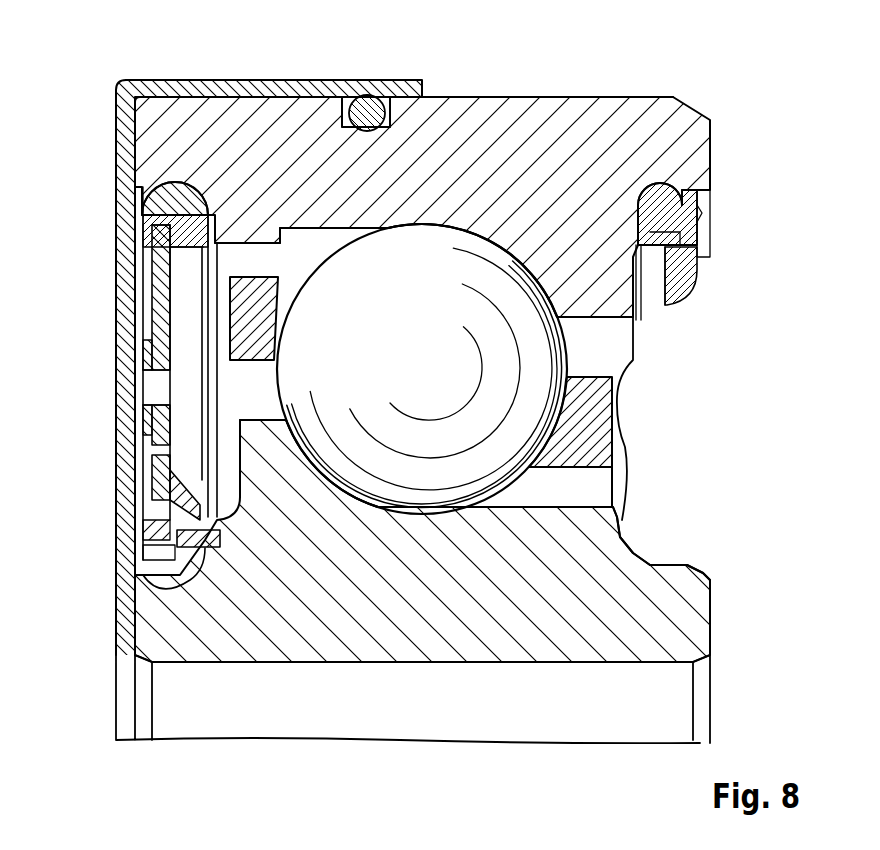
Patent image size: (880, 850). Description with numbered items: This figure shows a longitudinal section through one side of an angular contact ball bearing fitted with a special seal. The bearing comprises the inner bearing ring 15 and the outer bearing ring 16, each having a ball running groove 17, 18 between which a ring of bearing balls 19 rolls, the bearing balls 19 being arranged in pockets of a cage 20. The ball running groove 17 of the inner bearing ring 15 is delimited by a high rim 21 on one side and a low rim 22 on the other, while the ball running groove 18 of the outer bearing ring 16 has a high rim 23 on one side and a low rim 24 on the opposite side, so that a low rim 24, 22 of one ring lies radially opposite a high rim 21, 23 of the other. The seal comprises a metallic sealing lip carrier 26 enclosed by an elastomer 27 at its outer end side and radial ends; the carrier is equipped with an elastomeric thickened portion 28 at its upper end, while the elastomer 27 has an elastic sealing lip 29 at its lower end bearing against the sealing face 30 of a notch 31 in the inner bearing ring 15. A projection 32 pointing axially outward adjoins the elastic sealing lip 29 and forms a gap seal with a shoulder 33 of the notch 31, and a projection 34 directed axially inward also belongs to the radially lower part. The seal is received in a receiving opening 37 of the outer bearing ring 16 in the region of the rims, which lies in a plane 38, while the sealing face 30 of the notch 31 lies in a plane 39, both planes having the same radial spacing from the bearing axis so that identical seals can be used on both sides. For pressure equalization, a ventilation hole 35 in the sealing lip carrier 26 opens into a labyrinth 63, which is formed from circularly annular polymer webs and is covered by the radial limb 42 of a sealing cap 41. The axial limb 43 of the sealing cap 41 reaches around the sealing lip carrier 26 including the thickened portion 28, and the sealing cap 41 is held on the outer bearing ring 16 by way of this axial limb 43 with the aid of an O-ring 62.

The inner bearing ring 15 is at (435, 650).
The outer bearing ring 16 is at (462, 112).
The ball running groove 17 is at (355, 500).
The ball running groove 18 is at (488, 235).
The bearing balls 19 is at (440, 377).
The cage 20 is at (610, 422).
The high rim 21 is at (272, 445).
The low rim 22 is at (518, 515).
The high rim 23 is at (586, 272).
The low rim 24 is at (325, 226).
The sealing lip carrier 26 is at (148, 300).
The elastomer 27 is at (150, 265).
The thickened portion 28 is at (160, 214).
The elastic sealing lip 29 is at (174, 576).
The sealing face 30 is at (215, 558).
The notch 31 is at (165, 558).
The projection 32 is at (145, 534).
The shoulder 33 is at (148, 557).
The projection 34 is at (155, 505).
The ventilation hole 35 is at (163, 383).
The receiving opening 37 is at (185, 180).
The plane 38 is at (183, 135).
The plane 39 is at (207, 516).
The sealing cap 41 is at (120, 82).
The radial limb 42 is at (140, 340).
The axial limb 43 is at (263, 78).
The O-ring 62 is at (367, 97).
The labyrinth 63 is at (135, 447).